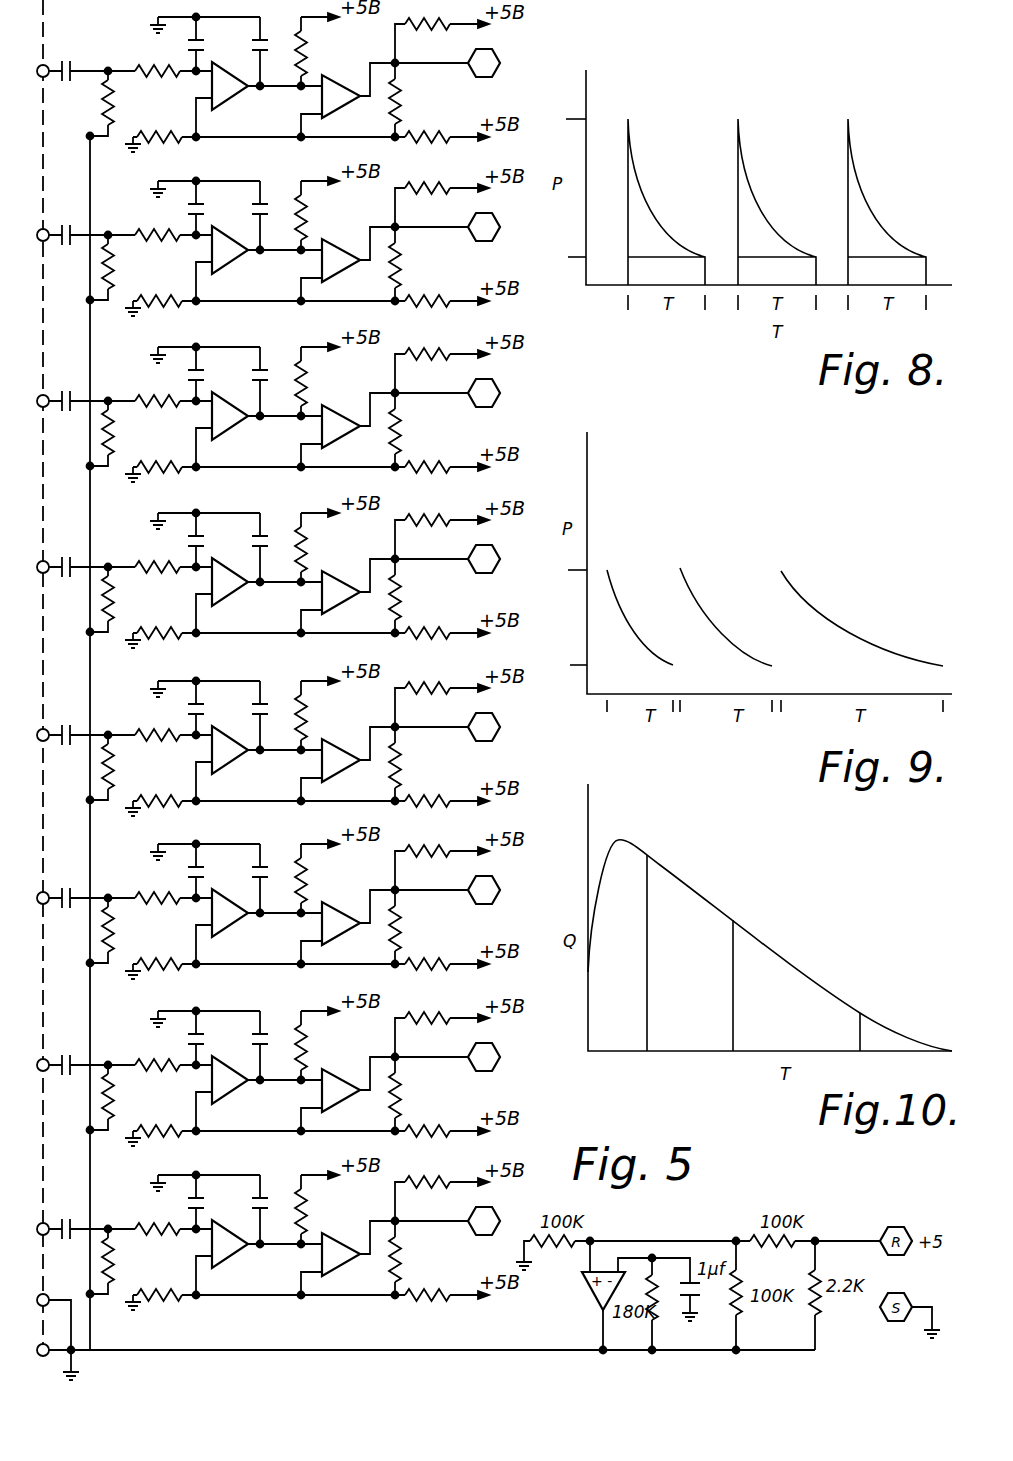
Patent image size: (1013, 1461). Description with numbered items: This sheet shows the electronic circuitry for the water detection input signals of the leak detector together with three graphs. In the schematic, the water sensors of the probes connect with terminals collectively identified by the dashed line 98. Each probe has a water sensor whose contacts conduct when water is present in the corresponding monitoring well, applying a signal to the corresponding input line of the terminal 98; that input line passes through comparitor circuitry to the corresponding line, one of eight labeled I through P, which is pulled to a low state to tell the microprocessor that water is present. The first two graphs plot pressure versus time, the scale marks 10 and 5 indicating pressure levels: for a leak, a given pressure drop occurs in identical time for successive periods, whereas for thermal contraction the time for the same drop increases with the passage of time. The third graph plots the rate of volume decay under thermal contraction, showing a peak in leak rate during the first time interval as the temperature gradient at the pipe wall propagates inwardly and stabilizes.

In FIG. 5, the terminals 98 is at (47, 35).
In FIG. 8, the axis scale value 10 is at (565, 120).
In FIG. 9, the axis scale value 10 is at (567, 571).
In FIG. 8, the axis scale value 5 is at (569, 258).
In FIG. 9, the axis scale value 5 is at (571, 666).